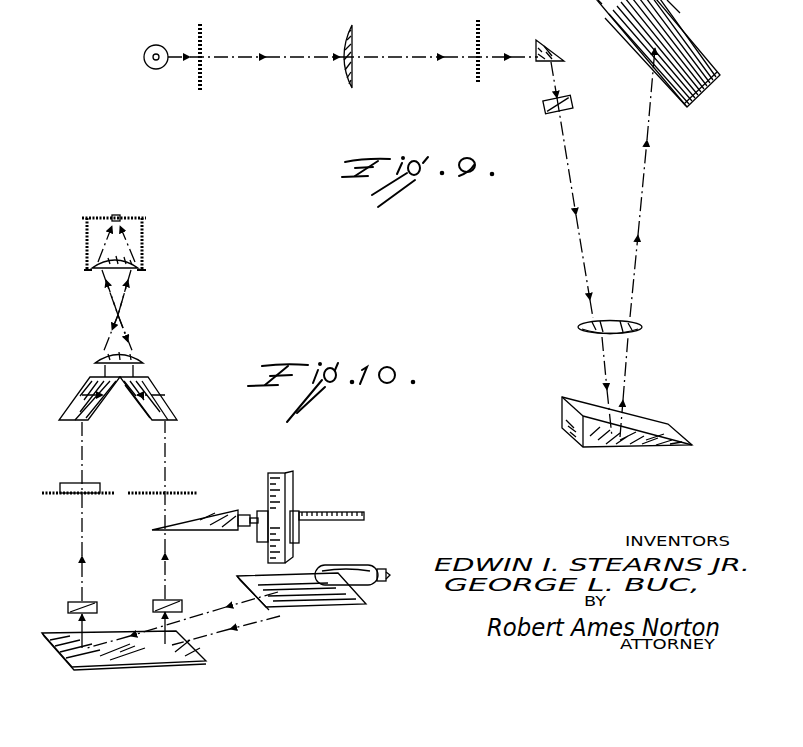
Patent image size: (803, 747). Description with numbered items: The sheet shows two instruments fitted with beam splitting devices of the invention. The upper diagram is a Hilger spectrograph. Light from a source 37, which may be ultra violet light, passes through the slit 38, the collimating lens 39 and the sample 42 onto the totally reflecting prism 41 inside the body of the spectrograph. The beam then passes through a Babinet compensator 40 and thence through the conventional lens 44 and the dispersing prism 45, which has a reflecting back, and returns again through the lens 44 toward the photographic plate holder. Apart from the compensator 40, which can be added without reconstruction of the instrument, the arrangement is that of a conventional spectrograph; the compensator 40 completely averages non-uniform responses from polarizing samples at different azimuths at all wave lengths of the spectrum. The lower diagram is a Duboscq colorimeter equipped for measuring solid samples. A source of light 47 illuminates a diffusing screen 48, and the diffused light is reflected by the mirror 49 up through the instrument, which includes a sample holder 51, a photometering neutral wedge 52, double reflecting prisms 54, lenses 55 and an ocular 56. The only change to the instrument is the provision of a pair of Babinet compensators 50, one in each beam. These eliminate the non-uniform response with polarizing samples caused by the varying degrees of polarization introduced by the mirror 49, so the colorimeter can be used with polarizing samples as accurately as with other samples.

In FIG. 9, the source 37 is at (146, 50).
In FIG. 9, the slit 38 is at (205, 55).
In FIG. 9, the collimating lens 39 is at (355, 37).
In FIG. 9, the Babinet compensator 40 is at (575, 102).
In FIG. 9, the totally reflecting prism 41 is at (540, 40).
In FIG. 9, the sample 42 is at (476, 56).
In FIG. 9, the lens 44 is at (641, 324).
In FIG. 9, the dispersing prism 45 is at (646, 448).
In FIG. 10, the source of light 47 is at (372, 566).
In FIG. 10, the diffusing screen 48 is at (342, 600).
In FIG. 10, the mirror 49 is at (206, 659).
In FIG. 10, the Babinet compensators 50 is at (153, 602).
In FIG. 10, the sample holder 51 is at (56, 490).
In FIG. 10, the photometering neutral wedge 52 is at (215, 529).
In FIG. 10, the double reflecting prisms 54 is at (150, 421).
In FIG. 10, the lenses 55 is at (97, 270).
In FIG. 10, the ocular 56 is at (116, 213).